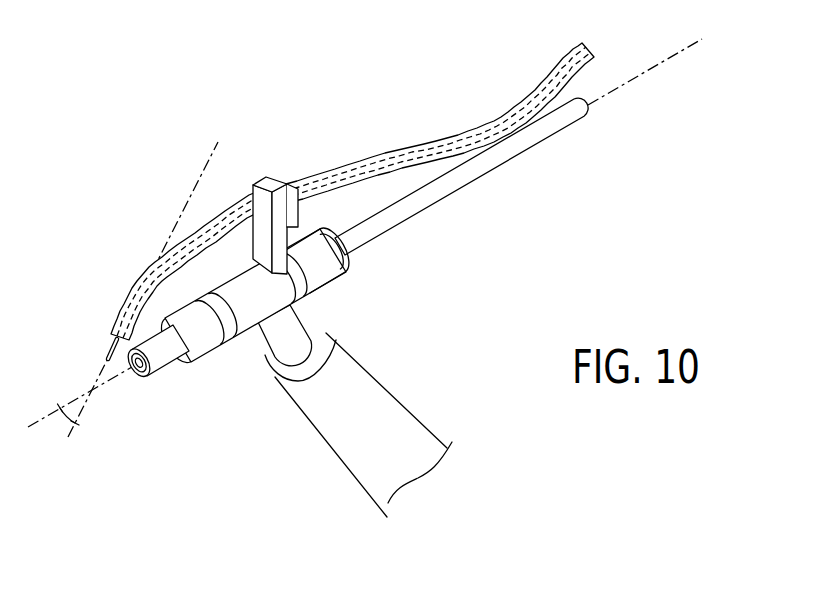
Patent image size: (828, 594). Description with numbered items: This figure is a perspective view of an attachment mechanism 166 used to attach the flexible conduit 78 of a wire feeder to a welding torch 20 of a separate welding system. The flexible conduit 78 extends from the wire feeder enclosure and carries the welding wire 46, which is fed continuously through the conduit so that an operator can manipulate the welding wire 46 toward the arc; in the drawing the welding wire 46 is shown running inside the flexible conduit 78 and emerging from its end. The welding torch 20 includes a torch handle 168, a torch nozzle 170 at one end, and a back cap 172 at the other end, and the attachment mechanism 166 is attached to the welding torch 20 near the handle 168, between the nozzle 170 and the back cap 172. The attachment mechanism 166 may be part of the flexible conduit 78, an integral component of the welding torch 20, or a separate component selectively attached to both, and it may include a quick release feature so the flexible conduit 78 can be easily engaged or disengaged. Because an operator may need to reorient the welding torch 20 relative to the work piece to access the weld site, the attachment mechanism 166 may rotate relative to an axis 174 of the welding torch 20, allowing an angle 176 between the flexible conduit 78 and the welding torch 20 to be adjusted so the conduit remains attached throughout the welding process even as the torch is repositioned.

The welding torch 20 is at (356, 307).
The welding wire 46 is at (108, 348).
The flexible conduit 78 is at (333, 201).
The attachment mechanism 166 is at (268, 178).
The torch handle 168 is at (408, 417).
The torch nozzle 170 is at (184, 358).
The back cap 172 is at (328, 278).
The axis 174 is at (645, 70).
The angle 176 is at (64, 414).